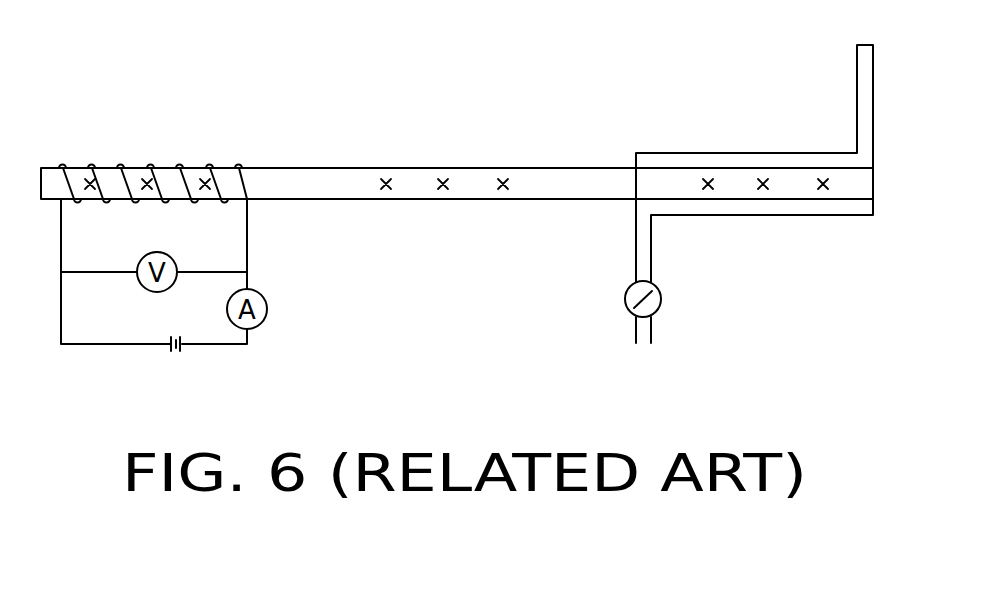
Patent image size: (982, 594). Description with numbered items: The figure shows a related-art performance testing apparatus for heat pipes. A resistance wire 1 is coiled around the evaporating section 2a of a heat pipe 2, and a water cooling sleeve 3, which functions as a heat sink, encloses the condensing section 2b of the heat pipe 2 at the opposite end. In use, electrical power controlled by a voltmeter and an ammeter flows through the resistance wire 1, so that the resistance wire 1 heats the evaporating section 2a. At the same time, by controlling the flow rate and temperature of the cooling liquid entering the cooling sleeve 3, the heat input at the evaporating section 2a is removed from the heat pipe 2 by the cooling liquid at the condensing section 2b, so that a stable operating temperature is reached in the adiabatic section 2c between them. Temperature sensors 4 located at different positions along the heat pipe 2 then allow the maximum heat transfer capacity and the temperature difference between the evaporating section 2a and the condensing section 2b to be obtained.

The resistance wire 1 is at (181, 164).
The heat pipe 2 is at (293, 170).
The evaporating section 2a is at (111, 180).
The condensing section 2b is at (693, 180).
The adiabatic section 2c is at (474, 183).
The water cooling sleeve 3 is at (793, 162).
The temperature sensors 4 is at (390, 178).